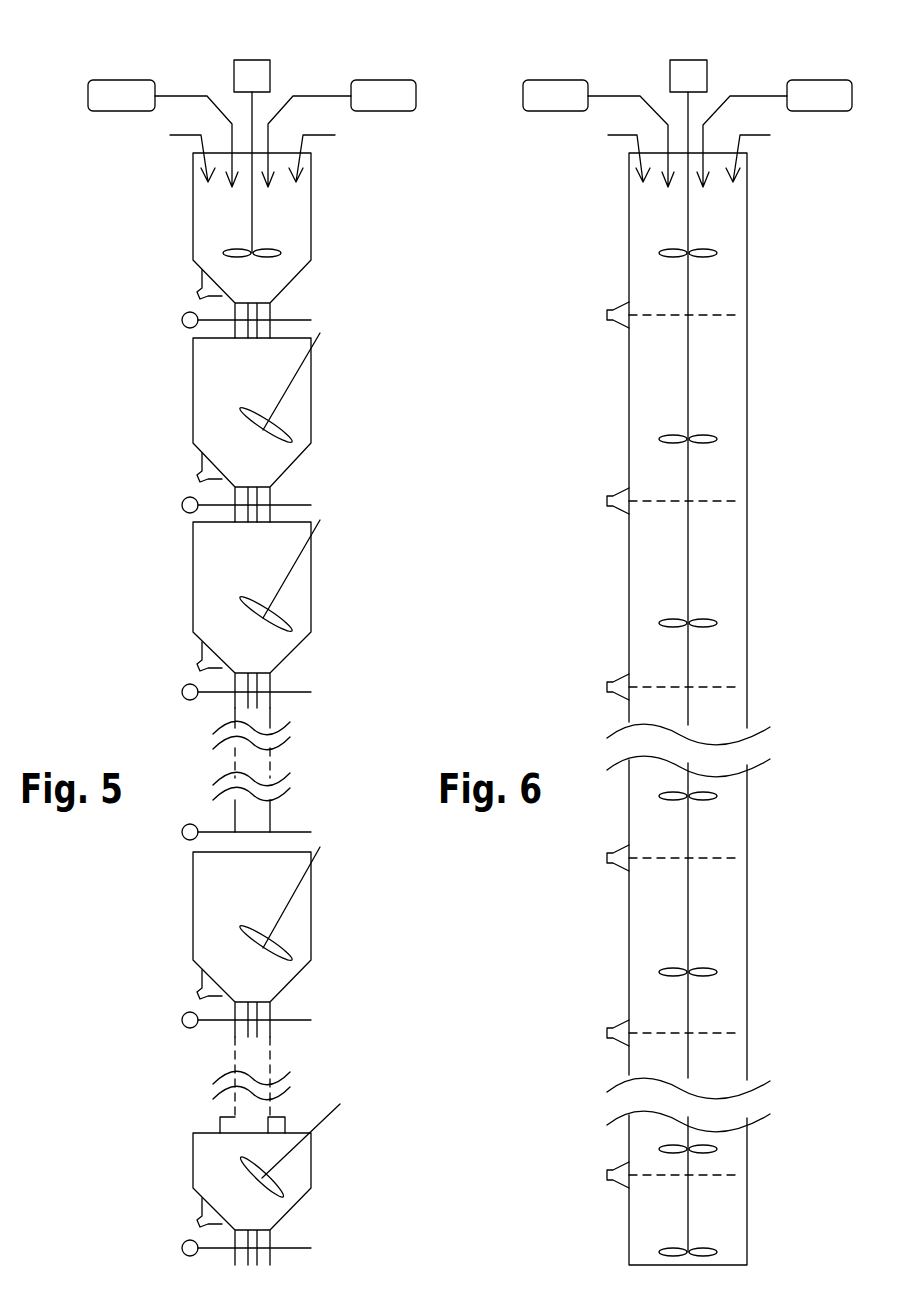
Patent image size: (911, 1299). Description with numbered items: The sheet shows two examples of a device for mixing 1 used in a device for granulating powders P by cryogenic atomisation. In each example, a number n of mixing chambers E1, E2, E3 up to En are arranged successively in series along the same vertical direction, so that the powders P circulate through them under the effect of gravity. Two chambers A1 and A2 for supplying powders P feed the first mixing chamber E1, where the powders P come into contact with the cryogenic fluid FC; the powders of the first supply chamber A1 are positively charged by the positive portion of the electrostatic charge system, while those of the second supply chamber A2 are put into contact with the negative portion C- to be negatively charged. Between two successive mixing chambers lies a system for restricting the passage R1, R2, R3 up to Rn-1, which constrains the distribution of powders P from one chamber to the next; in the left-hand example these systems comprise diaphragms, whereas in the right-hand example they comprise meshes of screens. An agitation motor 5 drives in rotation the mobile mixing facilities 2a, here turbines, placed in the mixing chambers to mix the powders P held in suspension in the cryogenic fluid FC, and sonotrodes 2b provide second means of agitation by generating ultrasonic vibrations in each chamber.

In FIG. 5, the device for mixing 1 is at (100, 602).
In FIG. 6, the device for mixing 1 is at (838, 548).
In FIG. 5, the agitation motor 5 is at (252, 68).
In FIG. 6, the agitation motor 5 is at (688, 68).
In FIG. 5, the powders P is at (140, 84).
In FIG. 6, the powders P is at (572, 86).
In FIG. 5, the first chamber for supplying powders A1 is at (100, 97).
In FIG. 6, the first chamber for supplying powders A1 is at (540, 90).
In FIG. 5, the second chamber for supplying powders A2 is at (405, 97).
In FIG. 6, the second chamber for supplying powders A2 is at (838, 98).
In FIG. 5, the negative portion of the electrostatic charge system C- is at (326, 153).
In FIG. 6, the negative portion of the electrostatic charge system C- is at (763, 153).
In FIG. 5, the first mixing chamber E1 is at (205, 200).
In FIG. 6, the first mixing chamber E1 is at (643, 238).
In FIG. 5, the second mixing chamber E2 is at (210, 382).
In FIG. 6, the second mixing chamber E2 is at (642, 364).
In FIG. 5, the third mixing chamber E3 is at (210, 567).
In FIG. 6, the third mixing chamber E3 is at (647, 544).
In FIG. 5, the n-th mixing chamber En is at (200, 1167).
In FIG. 6, the n-th mixing chamber En is at (640, 1233).
In FIG. 5, the mobile mixing facilities 2a is at (235, 252).
In FIG. 6, the mobile mixing facilities 2a is at (688, 213).
In FIG. 5, the sonotrodes 2b is at (200, 296).
In FIG. 6, the sonotrodes 2b is at (607, 315).
In FIG. 5, the cryogenic fluid FC is at (282, 276).
In FIG. 6, the cryogenic fluid FC is at (740, 273).
In FIG. 5, the first system for restricting the passage R1 is at (311, 320).
In FIG. 6, the first system for restricting the passage R1 is at (718, 315).
In FIG. 5, the second system for restricting the passage R2 is at (311, 505).
In FIG. 6, the second system for restricting the passage R2 is at (713, 501).
In FIG. 5, the third system for restricting the passage R3 is at (311, 692).
In FIG. 6, the third system for restricting the passage R3 is at (720, 687).
In FIG. 6, the (n-1)-th system for restricting the passage Rn-1 is at (735, 1176).